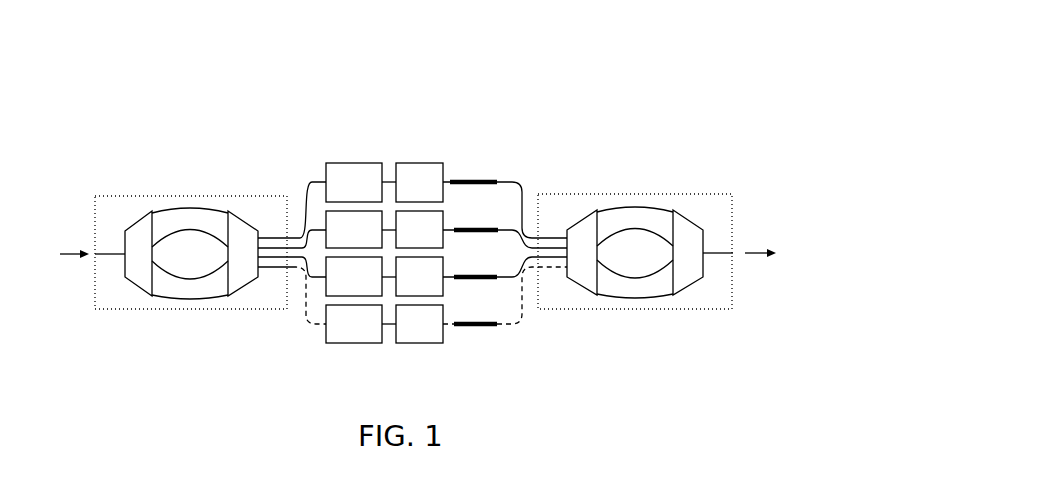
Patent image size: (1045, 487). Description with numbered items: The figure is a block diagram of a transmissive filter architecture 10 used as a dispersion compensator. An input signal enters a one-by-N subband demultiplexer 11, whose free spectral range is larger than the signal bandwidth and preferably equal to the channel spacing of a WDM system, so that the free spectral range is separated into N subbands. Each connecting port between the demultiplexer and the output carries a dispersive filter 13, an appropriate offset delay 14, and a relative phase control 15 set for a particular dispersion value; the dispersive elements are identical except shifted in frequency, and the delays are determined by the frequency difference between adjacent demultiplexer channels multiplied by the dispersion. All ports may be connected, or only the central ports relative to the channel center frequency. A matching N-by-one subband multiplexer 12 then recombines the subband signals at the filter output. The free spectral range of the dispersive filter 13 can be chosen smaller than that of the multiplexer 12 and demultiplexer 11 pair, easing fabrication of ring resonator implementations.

The filter architecture 10 is at (761, 97).
The 1×N subband demultiplexer 11 is at (173, 325).
The N×1 subband multiplexer 12 is at (642, 323).
The dispersive filter 13 is at (345, 150).
The offset delay 14 is at (423, 145).
The relative phase control 15 is at (485, 165).